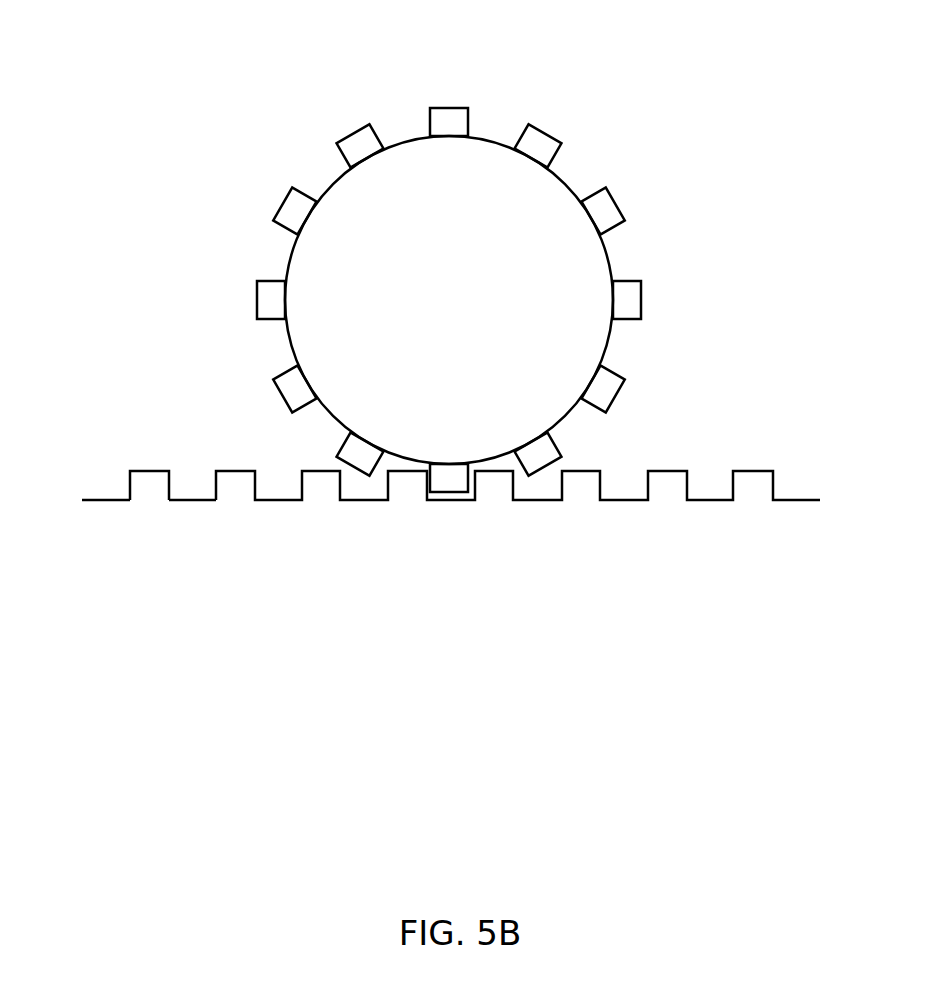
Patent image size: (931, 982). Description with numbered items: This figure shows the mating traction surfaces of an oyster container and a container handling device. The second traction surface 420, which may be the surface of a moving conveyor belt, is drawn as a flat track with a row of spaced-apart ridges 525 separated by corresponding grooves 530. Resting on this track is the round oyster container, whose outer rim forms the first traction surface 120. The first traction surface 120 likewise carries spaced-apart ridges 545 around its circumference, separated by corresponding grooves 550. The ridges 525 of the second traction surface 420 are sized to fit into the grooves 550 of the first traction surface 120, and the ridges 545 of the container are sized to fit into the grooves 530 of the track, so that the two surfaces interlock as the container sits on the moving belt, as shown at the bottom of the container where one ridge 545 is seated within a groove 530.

The first traction surface 120 is at (395, 145).
The second traction surface 420 is at (92, 492).
The ridge 525 is at (157, 472).
The groove 530 is at (207, 502).
The ridge 545 is at (362, 467).
The groove 550 is at (408, 458).